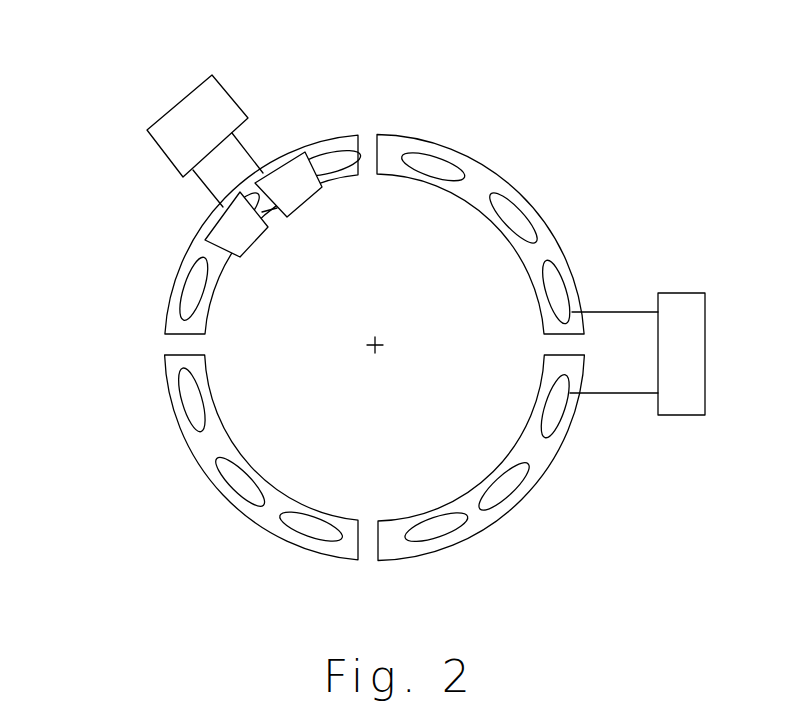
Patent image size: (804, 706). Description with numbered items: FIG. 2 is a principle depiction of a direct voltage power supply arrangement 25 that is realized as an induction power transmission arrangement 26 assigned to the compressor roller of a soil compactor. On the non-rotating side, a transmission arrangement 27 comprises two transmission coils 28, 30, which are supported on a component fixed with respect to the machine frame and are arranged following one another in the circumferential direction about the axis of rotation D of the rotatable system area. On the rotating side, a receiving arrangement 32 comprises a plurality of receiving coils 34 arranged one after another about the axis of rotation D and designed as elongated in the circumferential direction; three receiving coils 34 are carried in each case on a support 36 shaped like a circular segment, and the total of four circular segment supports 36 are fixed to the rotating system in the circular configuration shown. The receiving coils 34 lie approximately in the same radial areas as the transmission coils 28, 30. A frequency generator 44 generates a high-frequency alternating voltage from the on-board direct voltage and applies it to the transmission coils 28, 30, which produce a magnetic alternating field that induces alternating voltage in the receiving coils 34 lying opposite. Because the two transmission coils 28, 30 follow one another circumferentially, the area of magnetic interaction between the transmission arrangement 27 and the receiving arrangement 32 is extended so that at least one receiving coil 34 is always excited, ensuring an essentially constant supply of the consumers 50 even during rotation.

The direct voltage power supply arrangement 25 is at (148, 508).
The induction power transmission arrangement 26 is at (618, 64).
The transmission arrangement 27 is at (153, 228).
The transmission coil 28 is at (293, 150).
The transmission coil 30 is at (242, 255).
The receiving arrangement 32 is at (636, 245).
The receiving coil 34 is at (523, 217).
The support 36 is at (490, 168).
The frequency generator 44 is at (173, 103).
The consumers 50 is at (705, 352).
The axis of rotation D is at (382, 340).